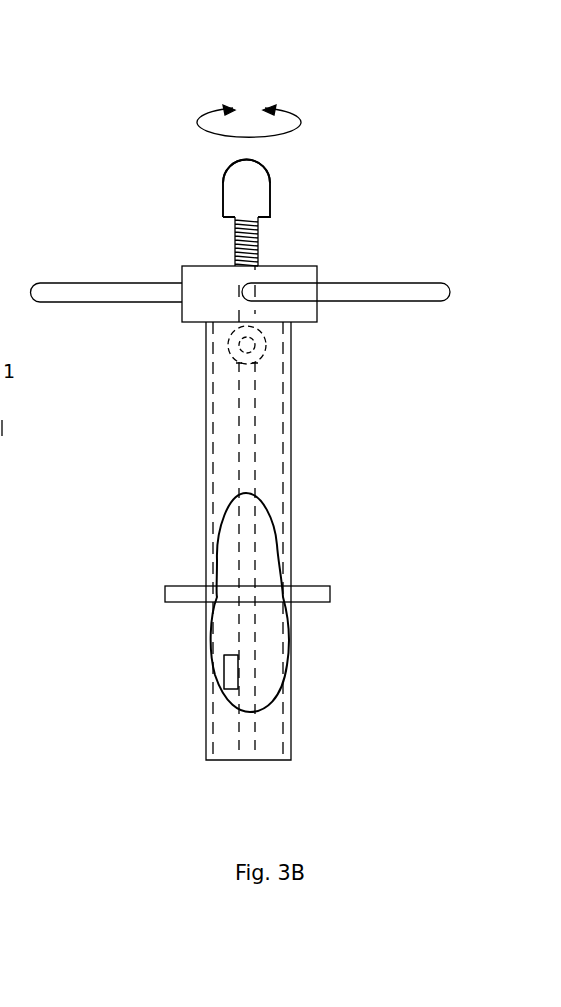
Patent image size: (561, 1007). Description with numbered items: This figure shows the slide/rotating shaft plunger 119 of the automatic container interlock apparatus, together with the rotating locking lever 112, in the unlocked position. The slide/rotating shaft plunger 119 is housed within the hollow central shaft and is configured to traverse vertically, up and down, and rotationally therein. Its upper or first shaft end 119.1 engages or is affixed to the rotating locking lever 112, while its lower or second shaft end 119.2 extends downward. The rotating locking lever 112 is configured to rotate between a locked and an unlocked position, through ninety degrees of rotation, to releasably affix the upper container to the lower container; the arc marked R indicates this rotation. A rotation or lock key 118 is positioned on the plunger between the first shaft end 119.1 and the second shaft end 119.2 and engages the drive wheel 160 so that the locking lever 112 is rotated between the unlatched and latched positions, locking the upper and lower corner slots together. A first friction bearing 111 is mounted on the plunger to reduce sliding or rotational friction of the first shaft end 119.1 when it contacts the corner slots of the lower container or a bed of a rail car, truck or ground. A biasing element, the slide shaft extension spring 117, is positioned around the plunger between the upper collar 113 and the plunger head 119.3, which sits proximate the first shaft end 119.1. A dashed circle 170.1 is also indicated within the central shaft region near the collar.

The first friction bearing 111 is at (237, 173).
The rotating locking lever 112 is at (393, 283).
The upper collar 113 is at (203, 282).
The slide shaft extension spring 117 is at (260, 218).
The rotation or lock key 118 is at (235, 673).
The slide/rotating shaft plunger 119 is at (247, 530).
The first shaft end of slide shaft plunger 119.1 is at (222, 217).
The second shaft end of slide shaft plunger 119.2 is at (248, 662).
The plunger head 119.3 is at (297, 174).
The drive wheel 160 is at (320, 593).
The pivot axis 170.1 is at (248, 342).
The rotation direction R is at (297, 118).